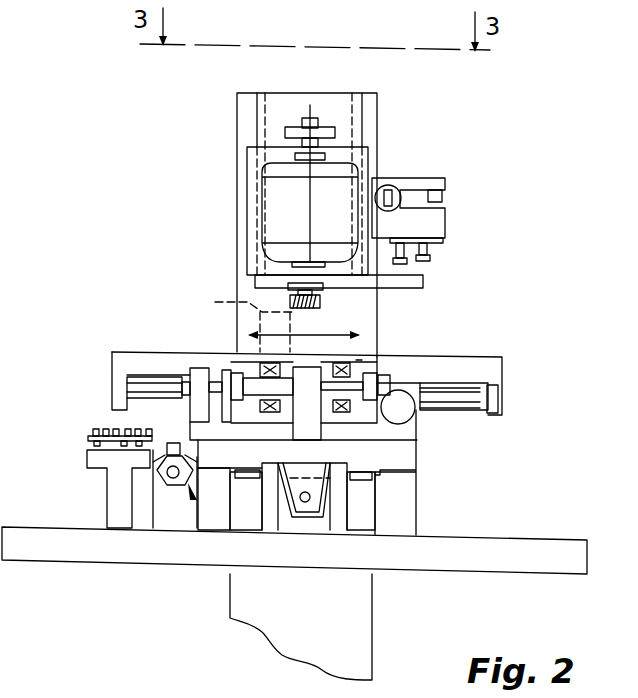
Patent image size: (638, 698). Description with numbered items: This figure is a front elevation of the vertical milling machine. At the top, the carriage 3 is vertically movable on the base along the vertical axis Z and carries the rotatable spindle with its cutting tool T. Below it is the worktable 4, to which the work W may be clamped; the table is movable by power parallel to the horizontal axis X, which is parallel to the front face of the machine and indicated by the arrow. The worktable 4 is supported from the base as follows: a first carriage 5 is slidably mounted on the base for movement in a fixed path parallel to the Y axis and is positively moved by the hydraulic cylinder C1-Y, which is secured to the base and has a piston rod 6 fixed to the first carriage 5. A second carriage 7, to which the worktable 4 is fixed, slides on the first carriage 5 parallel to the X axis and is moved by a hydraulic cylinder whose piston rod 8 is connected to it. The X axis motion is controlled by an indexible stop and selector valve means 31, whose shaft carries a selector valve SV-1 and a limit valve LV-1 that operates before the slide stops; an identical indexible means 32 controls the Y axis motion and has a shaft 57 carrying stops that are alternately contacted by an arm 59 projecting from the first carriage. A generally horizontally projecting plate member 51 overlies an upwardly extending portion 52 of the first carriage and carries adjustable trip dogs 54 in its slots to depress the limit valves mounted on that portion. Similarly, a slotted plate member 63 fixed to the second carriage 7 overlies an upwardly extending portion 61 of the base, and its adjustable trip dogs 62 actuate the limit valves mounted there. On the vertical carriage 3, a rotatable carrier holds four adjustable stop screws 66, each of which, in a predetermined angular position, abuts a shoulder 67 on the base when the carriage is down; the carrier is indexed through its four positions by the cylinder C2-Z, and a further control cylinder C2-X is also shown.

The carriage 3 is at (245, 215).
The worktable 4 is at (460, 357).
The first carriage 5 is at (417, 470).
The piston rod 6 is at (303, 502).
The second carriage 7 is at (502, 372).
The piston rod 8 is at (480, 412).
The indexible stop and selector valve means 31 is at (268, 418).
The indexible stop and selector valve means 32 is at (193, 482).
The plate member 51 is at (356, 362).
The portion of the first carriage 52 is at (323, 430).
The trip dogs 54 is at (306, 358).
The shaft 57 is at (291, 387).
The arm 59 is at (193, 440).
The upwardly extending portion of the base 61 is at (95, 468).
The trip dogs 62 is at (95, 432).
The plate member 63 is at (90, 438).
The adjustable stop screws 66 is at (431, 245).
The shoulder 67 is at (423, 284).
The vertical axis Z is at (306, 207).
The cutting tool T is at (322, 300).
The work W is at (245, 321).
The horizontal axis X is at (304, 335).
The selector valve SV-1 is at (210, 370).
The limit valve LV-1 is at (190, 405).
The cylinder C2-Z is at (388, 188).
The X axis control cylinder C2-X is at (408, 420).
The hydraulic cylinder C1-Y is at (317, 522).